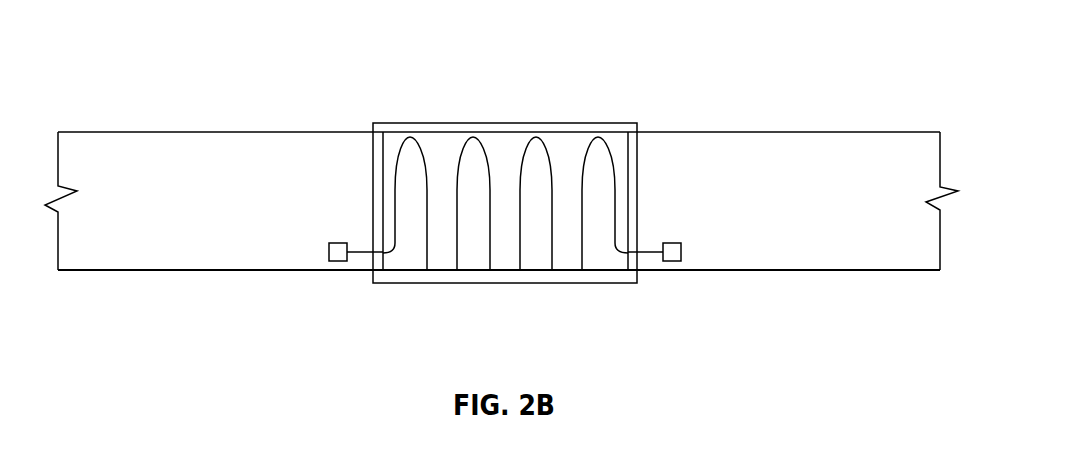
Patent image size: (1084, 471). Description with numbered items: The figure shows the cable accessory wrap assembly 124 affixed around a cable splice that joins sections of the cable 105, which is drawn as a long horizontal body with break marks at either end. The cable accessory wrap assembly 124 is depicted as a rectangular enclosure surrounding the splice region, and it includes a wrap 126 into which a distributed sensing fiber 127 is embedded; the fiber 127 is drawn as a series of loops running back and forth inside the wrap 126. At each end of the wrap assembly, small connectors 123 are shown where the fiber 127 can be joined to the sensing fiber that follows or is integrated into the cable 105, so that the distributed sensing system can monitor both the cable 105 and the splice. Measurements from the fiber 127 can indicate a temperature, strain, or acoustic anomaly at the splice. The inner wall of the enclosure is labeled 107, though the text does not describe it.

The cable 105 is at (213, 170).
The inner wall of coil housing 107 is at (606, 275).
The connectors 123 is at (337, 253).
The cable accessory wrap assembly 124 is at (626, 129).
The wrap 126 is at (511, 156).
The distributed sensing fiber 127 is at (590, 158).